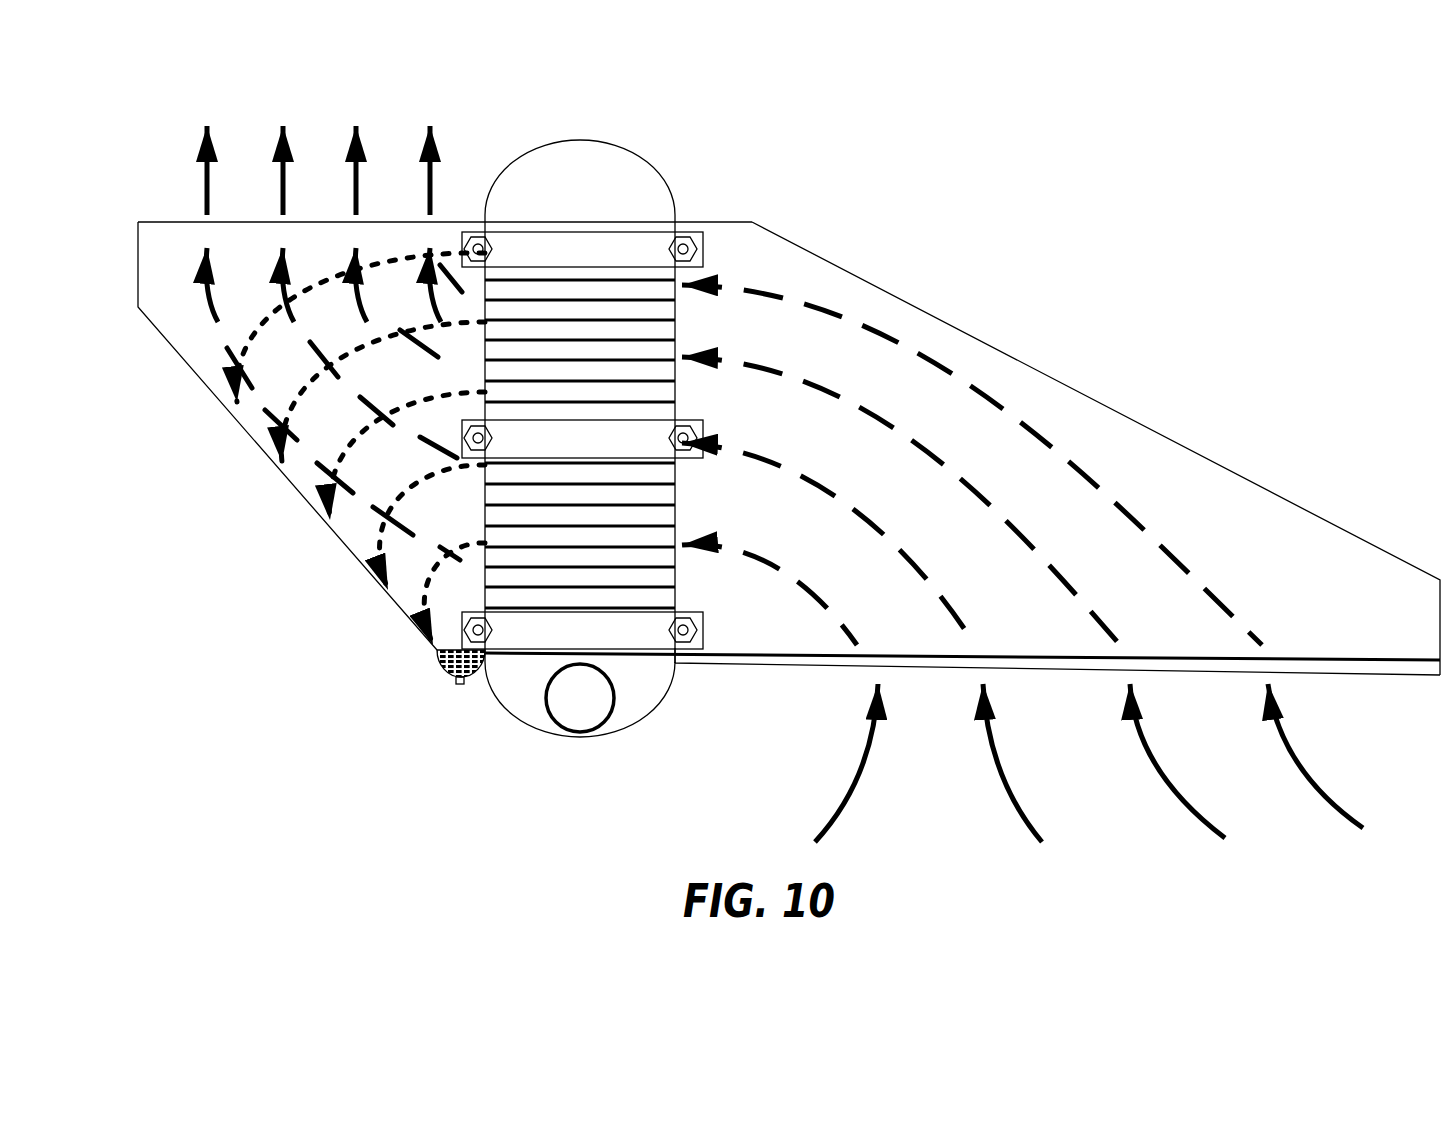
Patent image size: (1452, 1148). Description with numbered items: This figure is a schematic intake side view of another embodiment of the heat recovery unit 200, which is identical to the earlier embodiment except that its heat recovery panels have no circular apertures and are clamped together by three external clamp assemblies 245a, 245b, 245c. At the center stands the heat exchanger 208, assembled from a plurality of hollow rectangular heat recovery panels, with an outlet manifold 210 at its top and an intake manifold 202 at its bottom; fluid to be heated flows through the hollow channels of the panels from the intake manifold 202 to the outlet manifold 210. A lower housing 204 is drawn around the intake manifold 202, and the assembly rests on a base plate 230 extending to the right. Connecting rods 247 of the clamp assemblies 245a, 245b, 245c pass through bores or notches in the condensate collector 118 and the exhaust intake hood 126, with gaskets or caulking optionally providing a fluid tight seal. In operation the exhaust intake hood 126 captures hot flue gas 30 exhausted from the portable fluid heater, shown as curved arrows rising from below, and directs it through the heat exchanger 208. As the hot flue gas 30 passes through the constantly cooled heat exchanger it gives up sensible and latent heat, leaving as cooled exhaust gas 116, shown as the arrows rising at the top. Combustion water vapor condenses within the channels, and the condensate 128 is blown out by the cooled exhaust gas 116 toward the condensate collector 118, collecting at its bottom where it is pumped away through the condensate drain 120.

The hot flue gas 30 is at (1345, 780).
The cooled exhaust gas 116 is at (207, 262).
The condensate collector 118 is at (276, 477).
The condensate drain 120 is at (456, 683).
The exhaust intake hood 126 is at (1118, 405).
The condensate 128 is at (224, 398).
The heat recovery unit 200 is at (1048, 265).
The intake manifold 202 is at (602, 728).
The lower housing 204 is at (657, 688).
The heat exchanger 208 is at (680, 218).
The outlet manifold 210 is at (626, 170).
The base plate 230 is at (1327, 666).
The clamp assembly 245a is at (705, 256).
The clamp assembly 245b is at (707, 423).
The clamp assembly 245c is at (705, 633).
The connecting rods 247 is at (690, 247).